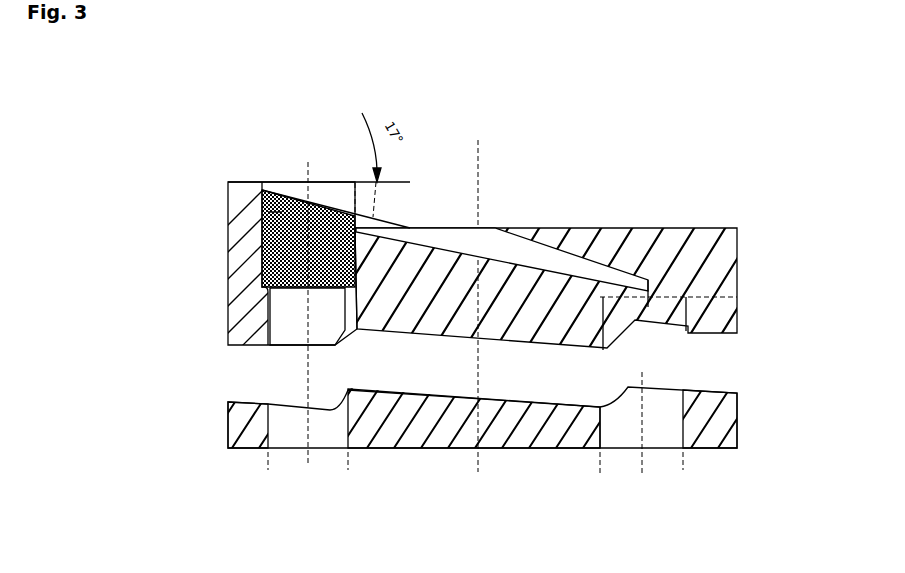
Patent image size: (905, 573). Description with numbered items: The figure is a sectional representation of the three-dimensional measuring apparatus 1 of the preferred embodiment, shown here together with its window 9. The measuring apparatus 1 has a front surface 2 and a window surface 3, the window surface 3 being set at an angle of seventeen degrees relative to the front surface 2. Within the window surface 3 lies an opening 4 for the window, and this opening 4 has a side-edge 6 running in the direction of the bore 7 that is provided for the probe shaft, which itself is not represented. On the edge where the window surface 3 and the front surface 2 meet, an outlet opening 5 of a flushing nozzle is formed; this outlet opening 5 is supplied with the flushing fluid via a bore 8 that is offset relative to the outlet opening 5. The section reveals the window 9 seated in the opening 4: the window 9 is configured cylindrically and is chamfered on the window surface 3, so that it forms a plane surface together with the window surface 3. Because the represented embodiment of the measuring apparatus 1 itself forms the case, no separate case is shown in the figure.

The measuring apparatus 1 is at (215, 213).
The front surface 2 is at (722, 230).
The window surface 3 is at (255, 188).
The opening 4 is at (290, 252).
The outlet opening 5 is at (506, 232).
The side-edge 6 is at (268, 302).
The bore 7 is at (283, 433).
The bore 8 is at (623, 440).
The window 9 is at (277, 207).